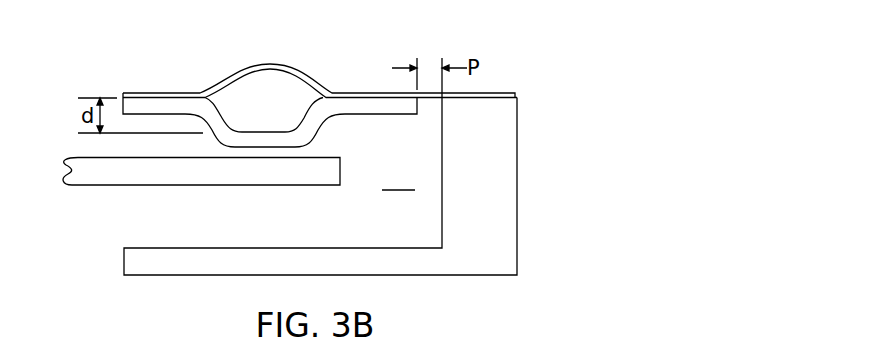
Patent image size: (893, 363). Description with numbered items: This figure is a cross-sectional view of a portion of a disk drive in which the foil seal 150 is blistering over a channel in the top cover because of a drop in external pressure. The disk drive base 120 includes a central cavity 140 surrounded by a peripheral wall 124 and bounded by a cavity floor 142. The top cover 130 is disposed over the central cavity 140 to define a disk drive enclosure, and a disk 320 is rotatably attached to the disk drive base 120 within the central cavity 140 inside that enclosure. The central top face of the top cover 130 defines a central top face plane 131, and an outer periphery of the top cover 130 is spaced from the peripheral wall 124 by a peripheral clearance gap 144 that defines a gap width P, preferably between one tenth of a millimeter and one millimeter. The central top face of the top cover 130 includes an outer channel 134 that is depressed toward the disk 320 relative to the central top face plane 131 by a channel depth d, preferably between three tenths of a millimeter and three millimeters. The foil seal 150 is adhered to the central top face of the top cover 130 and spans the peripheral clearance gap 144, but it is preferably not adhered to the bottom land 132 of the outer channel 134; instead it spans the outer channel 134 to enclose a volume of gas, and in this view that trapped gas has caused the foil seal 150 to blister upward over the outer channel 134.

The disk drive base 120 is at (502, 155).
The peripheral wall 124 is at (441, 203).
The top cover 130 is at (135, 103).
The central top face plane 131 is at (83, 97).
The bottom land 132 is at (273, 130).
The outer channel 134 is at (242, 97).
The central cavity 140 is at (398, 177).
The cavity floor 142 is at (152, 247).
The peripheral clearance gap 144 is at (430, 112).
The foil seal 150 is at (183, 97).
The disk 320 is at (92, 171).